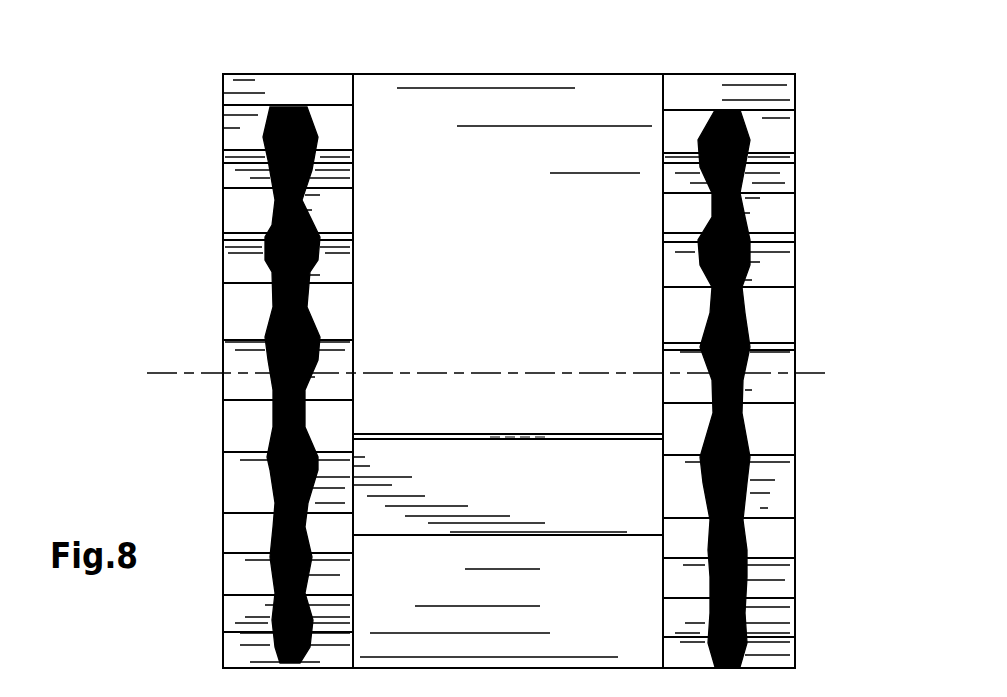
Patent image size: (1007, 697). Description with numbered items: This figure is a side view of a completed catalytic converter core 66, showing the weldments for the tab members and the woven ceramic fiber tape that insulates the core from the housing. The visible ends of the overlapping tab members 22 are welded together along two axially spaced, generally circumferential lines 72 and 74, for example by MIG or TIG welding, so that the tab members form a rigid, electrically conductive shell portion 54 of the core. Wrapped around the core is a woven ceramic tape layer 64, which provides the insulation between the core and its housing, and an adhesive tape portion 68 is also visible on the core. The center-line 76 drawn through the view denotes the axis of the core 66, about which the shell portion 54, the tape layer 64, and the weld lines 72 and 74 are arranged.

The tab member 22 is at (248, 650).
The shell portion 54 is at (205, 410).
The woven ceramic tape layer 64 is at (424, 135).
The core 66 is at (525, 48).
The adhesive tape portion 68 is at (410, 505).
The circumferential weld line 72 is at (268, 271).
The circumferential weld line 74 is at (748, 330).
The center-line 76 is at (808, 375).